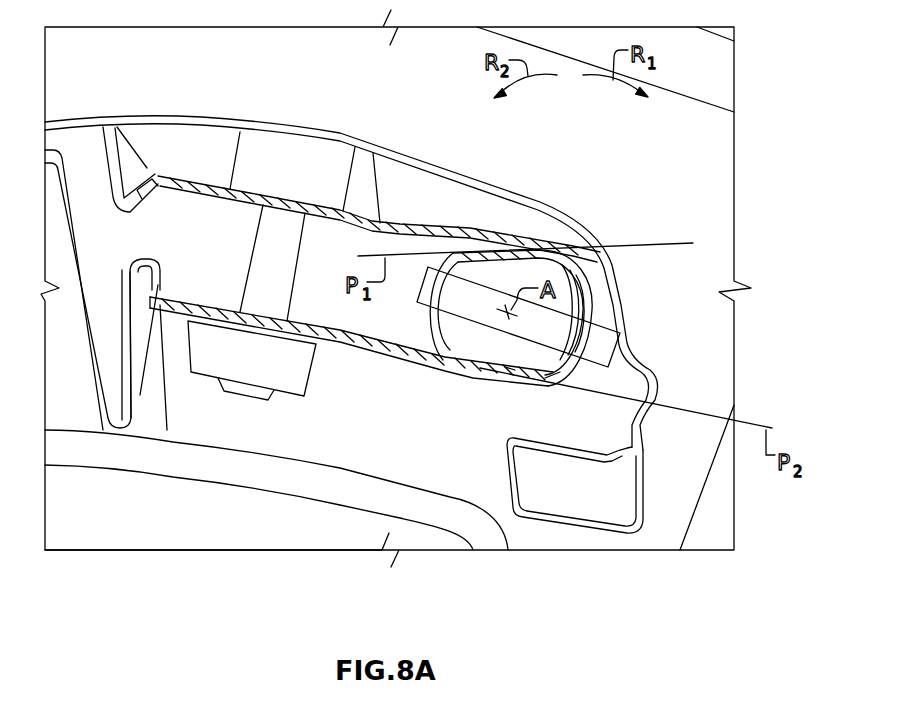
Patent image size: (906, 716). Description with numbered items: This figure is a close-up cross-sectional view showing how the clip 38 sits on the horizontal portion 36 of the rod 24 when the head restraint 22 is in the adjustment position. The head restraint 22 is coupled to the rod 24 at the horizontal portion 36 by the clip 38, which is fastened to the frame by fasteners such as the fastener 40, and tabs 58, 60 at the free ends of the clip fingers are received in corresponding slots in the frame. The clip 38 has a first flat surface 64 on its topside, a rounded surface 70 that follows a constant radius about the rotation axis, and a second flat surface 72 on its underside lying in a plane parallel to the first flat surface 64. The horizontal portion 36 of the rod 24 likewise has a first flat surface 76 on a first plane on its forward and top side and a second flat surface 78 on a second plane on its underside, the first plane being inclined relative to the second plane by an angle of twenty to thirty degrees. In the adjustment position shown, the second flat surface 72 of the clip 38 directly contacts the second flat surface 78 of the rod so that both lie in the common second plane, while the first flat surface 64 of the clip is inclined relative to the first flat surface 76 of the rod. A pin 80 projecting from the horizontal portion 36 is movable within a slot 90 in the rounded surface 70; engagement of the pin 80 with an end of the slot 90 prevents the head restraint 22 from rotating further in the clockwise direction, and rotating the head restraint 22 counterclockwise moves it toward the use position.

The head restraint 22 is at (145, 485).
The rod 24 is at (432, 553).
The horizontal portion 36 is at (577, 293).
The clip 38 is at (419, 197).
The fastener 40 is at (265, 152).
The tab 58 is at (156, 177).
The tab 60 is at (150, 290).
The first flat surface 64 is at (540, 255).
The rounded surface 70 is at (593, 310).
The second flat surface 72 is at (483, 383).
The first flat surface 76 is at (480, 257).
The second flat surface 78 is at (518, 372).
The pin 80 is at (603, 342).
The slot 90 is at (572, 363).